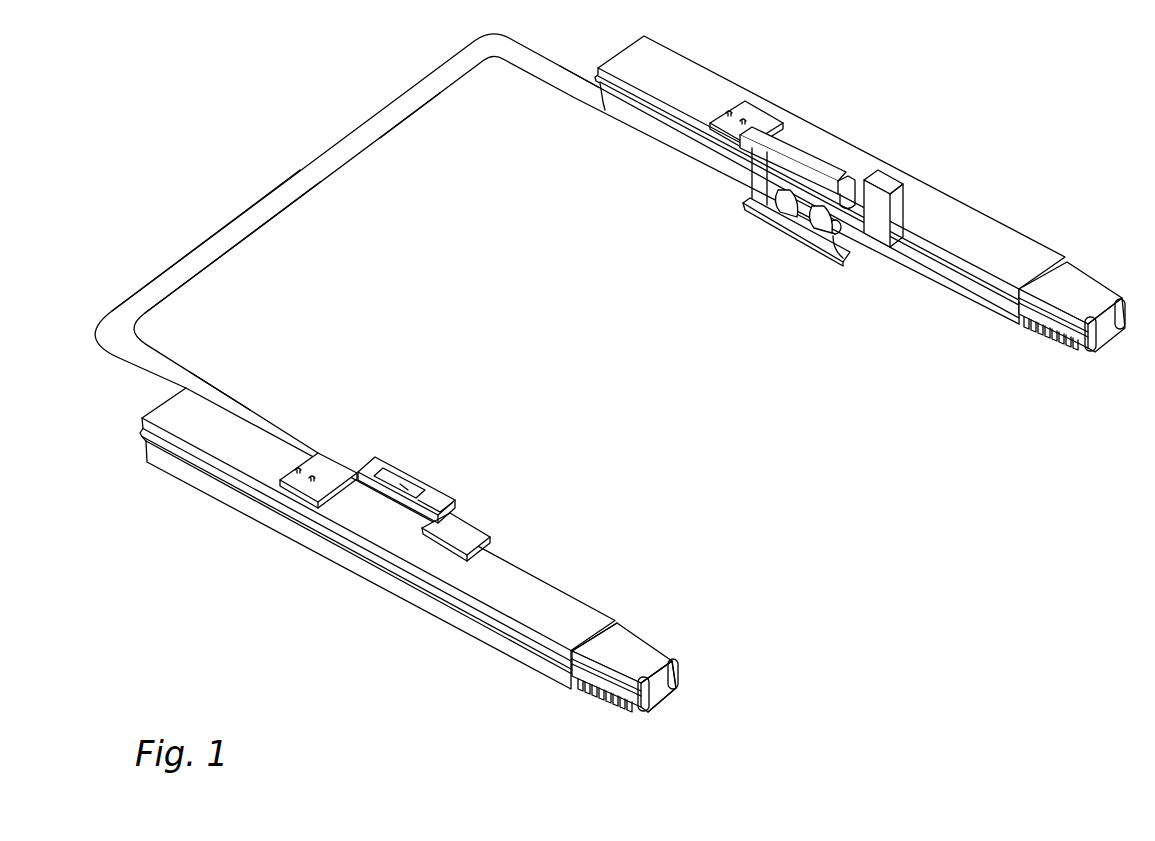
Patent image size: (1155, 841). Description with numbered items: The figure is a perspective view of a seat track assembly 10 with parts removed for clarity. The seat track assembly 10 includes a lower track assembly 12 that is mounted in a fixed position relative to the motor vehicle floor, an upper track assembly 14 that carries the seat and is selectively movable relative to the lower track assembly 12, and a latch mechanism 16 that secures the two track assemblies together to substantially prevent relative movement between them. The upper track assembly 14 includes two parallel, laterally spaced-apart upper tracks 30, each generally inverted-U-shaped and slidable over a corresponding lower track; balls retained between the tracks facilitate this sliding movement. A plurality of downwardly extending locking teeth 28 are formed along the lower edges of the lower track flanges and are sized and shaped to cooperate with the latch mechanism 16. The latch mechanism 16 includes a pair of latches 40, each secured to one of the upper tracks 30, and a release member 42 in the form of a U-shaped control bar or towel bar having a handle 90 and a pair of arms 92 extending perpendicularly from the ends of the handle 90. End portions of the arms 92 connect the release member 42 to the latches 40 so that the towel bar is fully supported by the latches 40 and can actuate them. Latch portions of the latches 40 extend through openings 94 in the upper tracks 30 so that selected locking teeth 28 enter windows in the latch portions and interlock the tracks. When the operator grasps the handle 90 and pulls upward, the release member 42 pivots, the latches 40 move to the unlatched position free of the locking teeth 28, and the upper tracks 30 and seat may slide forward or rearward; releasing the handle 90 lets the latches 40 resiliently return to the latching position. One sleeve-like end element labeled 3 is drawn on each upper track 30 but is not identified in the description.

The seat track assembly 10 is at (885, 500).
The lower track assembly 12 is at (657, 653).
The upper track assembly 14 is at (580, 602).
The latch mechanism 16 is at (375, 119).
The locking teeth 28 is at (588, 702).
The connector sleeve 3 is at (631, 637).
The upper track 30 is at (525, 572).
The latch 40 is at (414, 478).
The release member 42 is at (257, 216).
The handle 90 is at (401, 128).
The arms 92 is at (622, 125).
The openings 94 is at (888, 260).